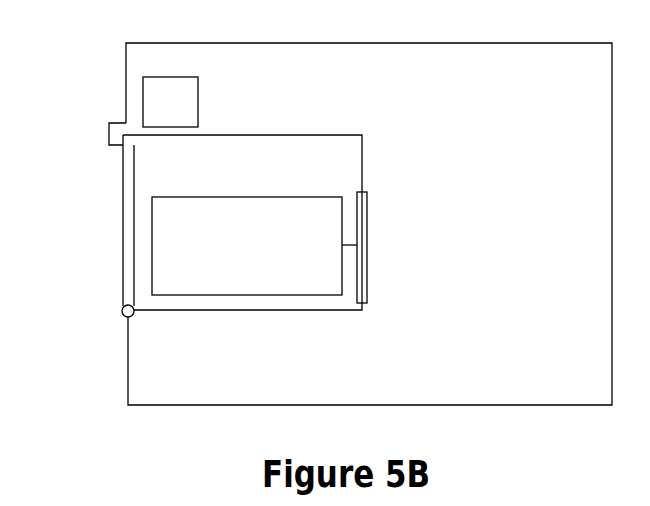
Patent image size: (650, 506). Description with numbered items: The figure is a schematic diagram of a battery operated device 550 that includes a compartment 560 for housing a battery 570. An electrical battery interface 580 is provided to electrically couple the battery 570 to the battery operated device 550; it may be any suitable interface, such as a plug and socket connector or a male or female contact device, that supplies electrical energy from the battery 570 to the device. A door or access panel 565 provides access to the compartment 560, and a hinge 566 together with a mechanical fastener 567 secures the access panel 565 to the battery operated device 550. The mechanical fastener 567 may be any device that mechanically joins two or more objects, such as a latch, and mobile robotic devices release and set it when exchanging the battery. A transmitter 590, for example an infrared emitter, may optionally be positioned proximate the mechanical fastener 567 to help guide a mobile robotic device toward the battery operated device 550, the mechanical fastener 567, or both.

The battery operated device 550 is at (600, 78).
The compartment 560 is at (353, 171).
The access panel 565 is at (128, 195).
The hinge 566 is at (123, 313).
The mechanical fastener 567 is at (109, 126).
The battery 570 is at (335, 233).
The electrical battery interface 580 is at (367, 210).
The transmitter 590 is at (190, 111).